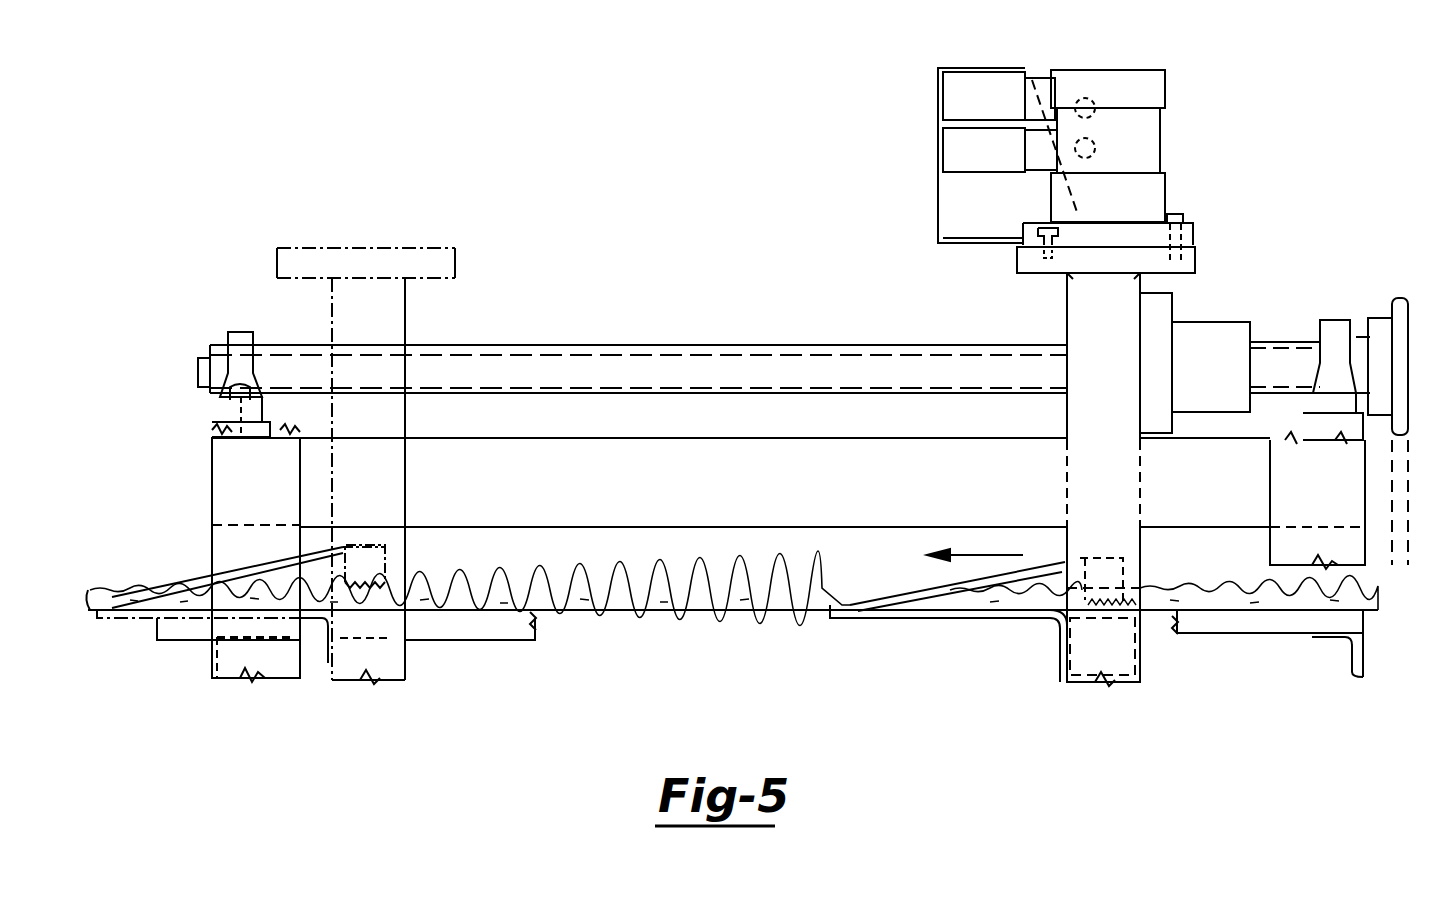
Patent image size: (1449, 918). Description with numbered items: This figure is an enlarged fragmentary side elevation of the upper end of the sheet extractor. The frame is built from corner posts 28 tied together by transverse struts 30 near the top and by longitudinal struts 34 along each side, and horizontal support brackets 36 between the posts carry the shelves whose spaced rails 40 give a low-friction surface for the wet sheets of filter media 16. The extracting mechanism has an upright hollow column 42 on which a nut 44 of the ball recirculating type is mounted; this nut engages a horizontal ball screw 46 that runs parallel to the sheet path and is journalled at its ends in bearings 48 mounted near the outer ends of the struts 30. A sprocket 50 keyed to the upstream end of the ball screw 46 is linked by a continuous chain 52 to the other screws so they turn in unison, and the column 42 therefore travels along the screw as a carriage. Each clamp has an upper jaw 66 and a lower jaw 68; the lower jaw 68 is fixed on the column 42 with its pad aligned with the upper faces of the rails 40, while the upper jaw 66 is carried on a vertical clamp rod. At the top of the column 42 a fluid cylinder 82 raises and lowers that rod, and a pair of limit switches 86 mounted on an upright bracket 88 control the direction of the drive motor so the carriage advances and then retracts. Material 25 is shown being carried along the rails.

The sheet of filter media 16 is at (745, 612).
The web material 25 is at (787, 597).
The corner post 28 is at (243, 668).
The transverse strut 30 is at (218, 476).
The longitudinal strut 34 is at (826, 416).
The support bracket 36 is at (1352, 652).
The rail 40 is at (460, 628).
The upright hollow column 42 is at (405, 318).
The nut 44 is at (1220, 325).
The ball screw 46 is at (668, 358).
The bearing 48 is at (237, 340).
The sprocket 50 is at (1405, 298).
The chain 52 is at (1408, 454).
The upper jaw 66 is at (1118, 575).
The lower jaw 68 is at (1078, 648).
The fluid cylinder 82 is at (1115, 72).
The limit switch 86 is at (983, 82).
The upright bracket 88 is at (982, 230).